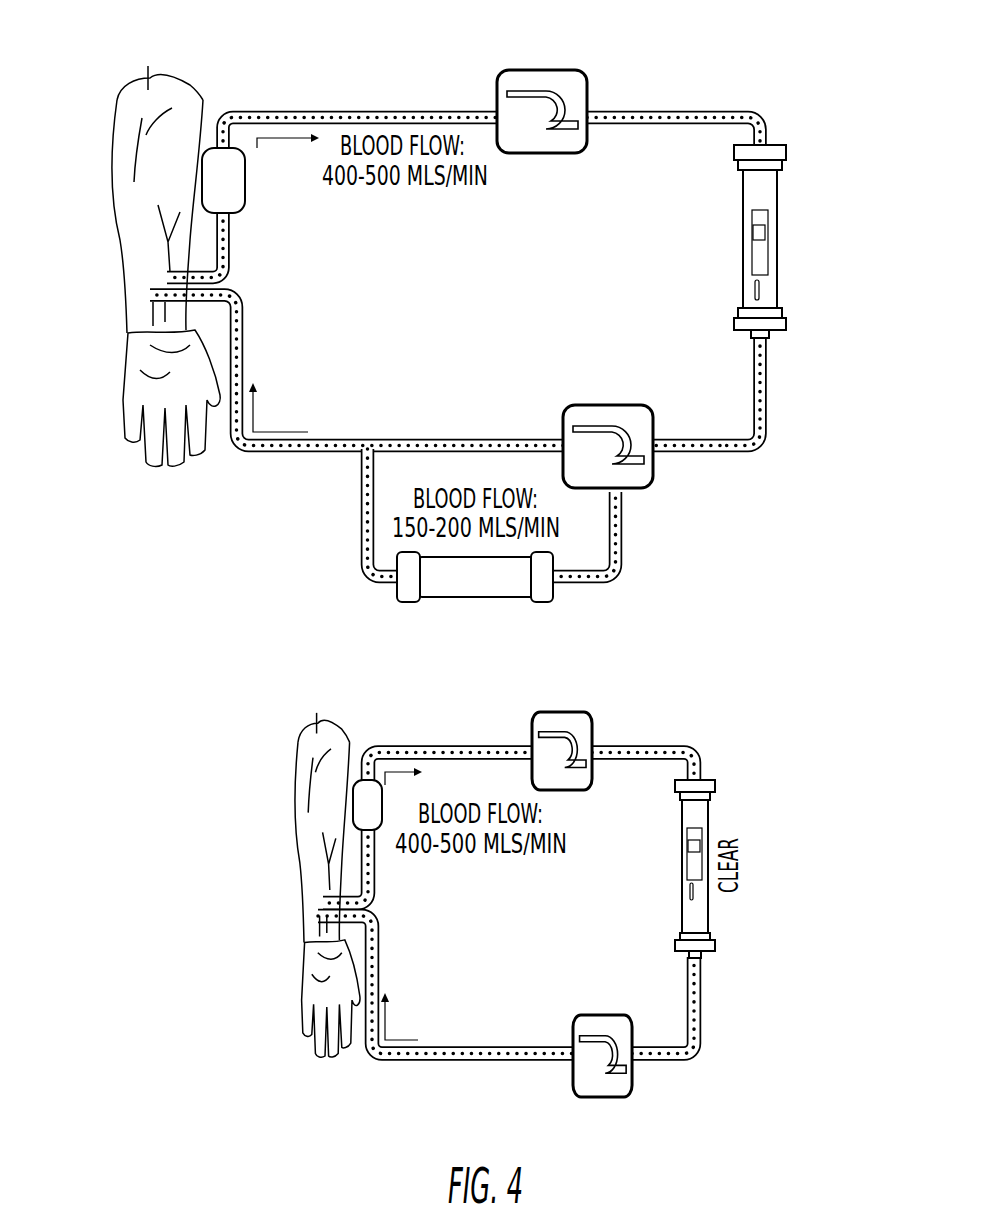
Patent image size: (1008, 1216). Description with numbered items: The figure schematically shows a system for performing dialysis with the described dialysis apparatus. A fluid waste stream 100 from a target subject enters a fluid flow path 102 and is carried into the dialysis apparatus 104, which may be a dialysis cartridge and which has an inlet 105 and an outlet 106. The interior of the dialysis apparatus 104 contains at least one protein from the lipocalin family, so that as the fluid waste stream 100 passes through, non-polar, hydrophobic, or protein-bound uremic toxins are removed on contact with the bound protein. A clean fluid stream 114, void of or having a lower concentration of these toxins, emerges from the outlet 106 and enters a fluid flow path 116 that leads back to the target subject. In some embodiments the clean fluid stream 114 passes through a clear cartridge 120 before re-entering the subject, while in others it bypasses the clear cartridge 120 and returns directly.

The fluid waste stream 100 is at (177, 227).
The fluid flow path 102 is at (233, 110).
The dialysis apparatus 104 is at (780, 223).
The inlet 105 is at (771, 143).
The outlet 106 is at (772, 333).
The clean fluid stream 114 is at (768, 400).
The fluid flow path 116 is at (700, 452).
The clear cartridge 120 is at (480, 600).